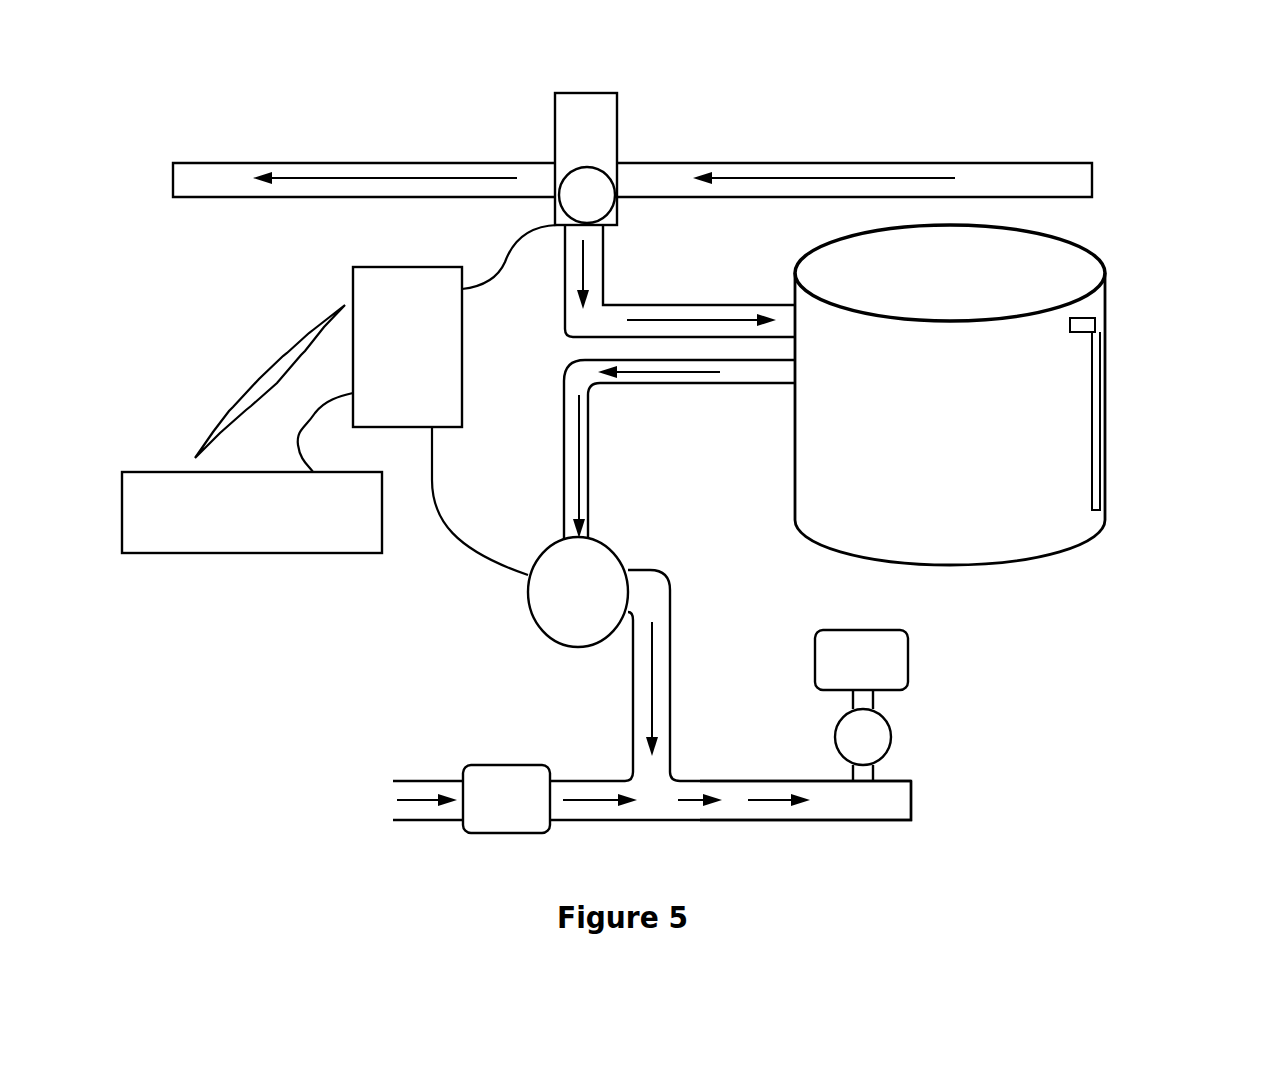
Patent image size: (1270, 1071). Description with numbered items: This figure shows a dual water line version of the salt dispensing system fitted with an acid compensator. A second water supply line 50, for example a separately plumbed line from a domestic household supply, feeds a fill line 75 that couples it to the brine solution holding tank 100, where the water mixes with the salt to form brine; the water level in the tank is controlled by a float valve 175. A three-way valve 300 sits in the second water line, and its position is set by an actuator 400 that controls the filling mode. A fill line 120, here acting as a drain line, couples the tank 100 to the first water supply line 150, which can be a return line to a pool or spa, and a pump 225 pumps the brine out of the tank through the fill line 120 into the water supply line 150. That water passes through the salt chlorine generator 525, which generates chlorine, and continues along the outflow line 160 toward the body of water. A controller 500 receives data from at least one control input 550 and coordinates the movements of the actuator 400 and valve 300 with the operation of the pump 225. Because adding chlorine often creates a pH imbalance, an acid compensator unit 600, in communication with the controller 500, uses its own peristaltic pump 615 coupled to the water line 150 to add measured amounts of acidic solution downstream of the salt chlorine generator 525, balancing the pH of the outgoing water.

The second water supply line 50 is at (740, 163).
The fill line 75 is at (670, 302).
The brine solution holding tank 100 is at (1105, 520).
The fill line 120 is at (640, 390).
The water supply line 150 is at (590, 780).
The outflow line 160 is at (900, 813).
The float valve 175 is at (1107, 375).
The pump 225 is at (542, 630).
The three-way valve 300 is at (553, 98).
The actuator 400 is at (600, 167).
The controller 500 is at (352, 277).
The salt chlorine generator 525 is at (500, 838).
The control input 550 is at (220, 553).
The acid compensator unit 600 is at (910, 657).
The peristaltic pump 615 is at (893, 735).